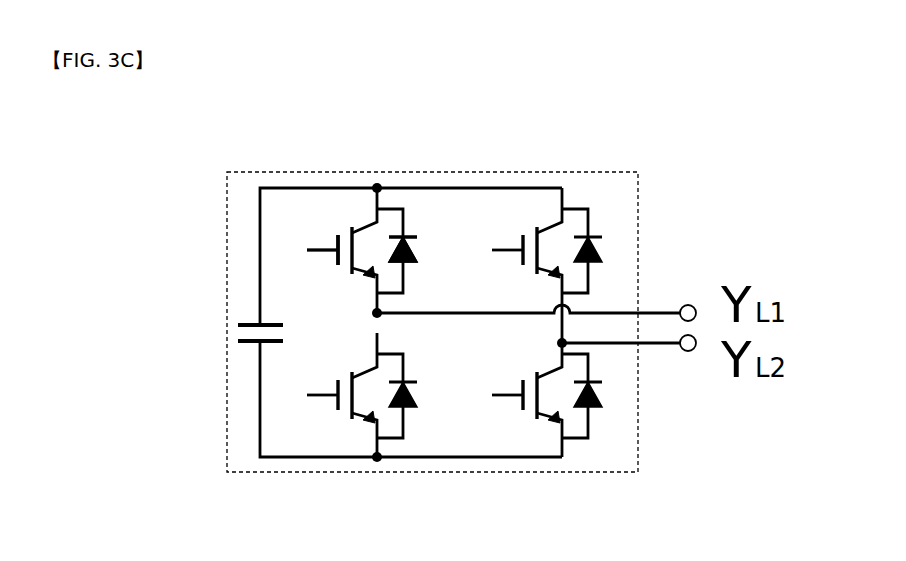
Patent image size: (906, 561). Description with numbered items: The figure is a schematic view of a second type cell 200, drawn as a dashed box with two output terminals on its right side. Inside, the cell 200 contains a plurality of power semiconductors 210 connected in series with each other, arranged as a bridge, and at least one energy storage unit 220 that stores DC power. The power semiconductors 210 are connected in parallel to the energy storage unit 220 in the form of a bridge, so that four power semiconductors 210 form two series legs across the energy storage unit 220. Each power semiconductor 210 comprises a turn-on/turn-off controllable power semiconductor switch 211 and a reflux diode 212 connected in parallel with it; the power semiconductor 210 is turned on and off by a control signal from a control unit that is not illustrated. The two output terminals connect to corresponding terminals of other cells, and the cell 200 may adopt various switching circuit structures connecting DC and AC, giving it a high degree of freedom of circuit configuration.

The cell 200 is at (365, 314).
The power semiconductor 210 is at (352, 213).
The power semiconductor switch 211 is at (332, 248).
The reflux diode 212 is at (420, 258).
The energy storage unit 220 is at (253, 344).